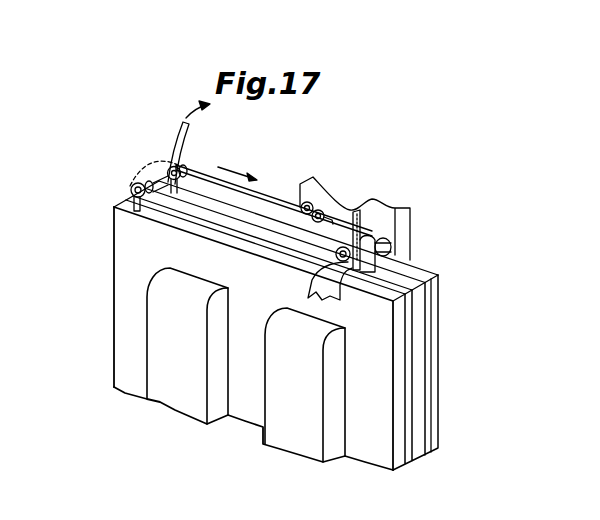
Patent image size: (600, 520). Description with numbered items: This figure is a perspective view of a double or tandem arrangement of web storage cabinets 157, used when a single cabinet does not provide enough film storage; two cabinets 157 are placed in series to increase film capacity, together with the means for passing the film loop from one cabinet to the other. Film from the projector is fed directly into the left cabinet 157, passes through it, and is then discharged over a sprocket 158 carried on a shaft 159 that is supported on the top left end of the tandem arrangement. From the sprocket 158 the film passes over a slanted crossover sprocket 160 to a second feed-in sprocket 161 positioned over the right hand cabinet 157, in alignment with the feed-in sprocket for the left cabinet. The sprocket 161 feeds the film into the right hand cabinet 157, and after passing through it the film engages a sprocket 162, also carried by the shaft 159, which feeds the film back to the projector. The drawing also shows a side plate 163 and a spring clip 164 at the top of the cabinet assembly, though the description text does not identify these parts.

The cabinet 157 is at (404, 443).
The sprocket 158 is at (131, 188).
The shaft 159 is at (168, 174).
The slanted crossover sprocket 160 is at (328, 197).
The second feed-in sprocket 161 is at (390, 240).
The sprocket 162 is at (180, 168).
The rear plate 163 is at (427, 372).
The spring clip 164 is at (350, 283).